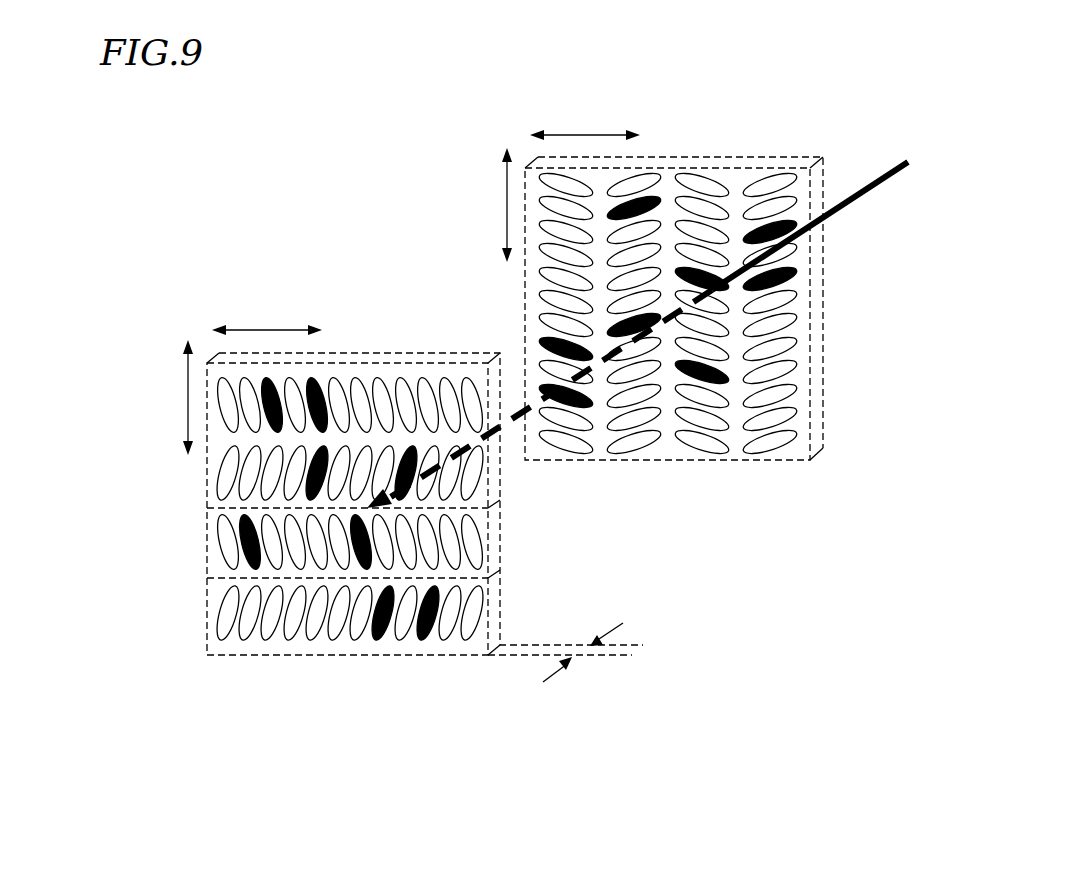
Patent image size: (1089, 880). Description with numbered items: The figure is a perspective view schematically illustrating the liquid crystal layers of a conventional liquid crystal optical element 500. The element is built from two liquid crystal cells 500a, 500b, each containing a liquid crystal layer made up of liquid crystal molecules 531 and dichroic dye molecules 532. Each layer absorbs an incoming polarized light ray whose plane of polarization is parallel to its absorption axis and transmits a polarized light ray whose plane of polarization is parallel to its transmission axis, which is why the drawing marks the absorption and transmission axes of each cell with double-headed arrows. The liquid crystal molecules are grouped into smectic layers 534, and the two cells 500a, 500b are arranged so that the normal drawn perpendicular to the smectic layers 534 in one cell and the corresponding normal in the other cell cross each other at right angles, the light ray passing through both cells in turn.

The liquid crystal optical element 500 is at (992, 243).
The liquid crystal cell 500a is at (347, 670).
The liquid crystal cell 500b is at (680, 485).
The liquid crystal molecules 531 is at (790, 350).
The dichroic dye molecules 532 is at (790, 276).
The smectic layers 534 is at (510, 500).